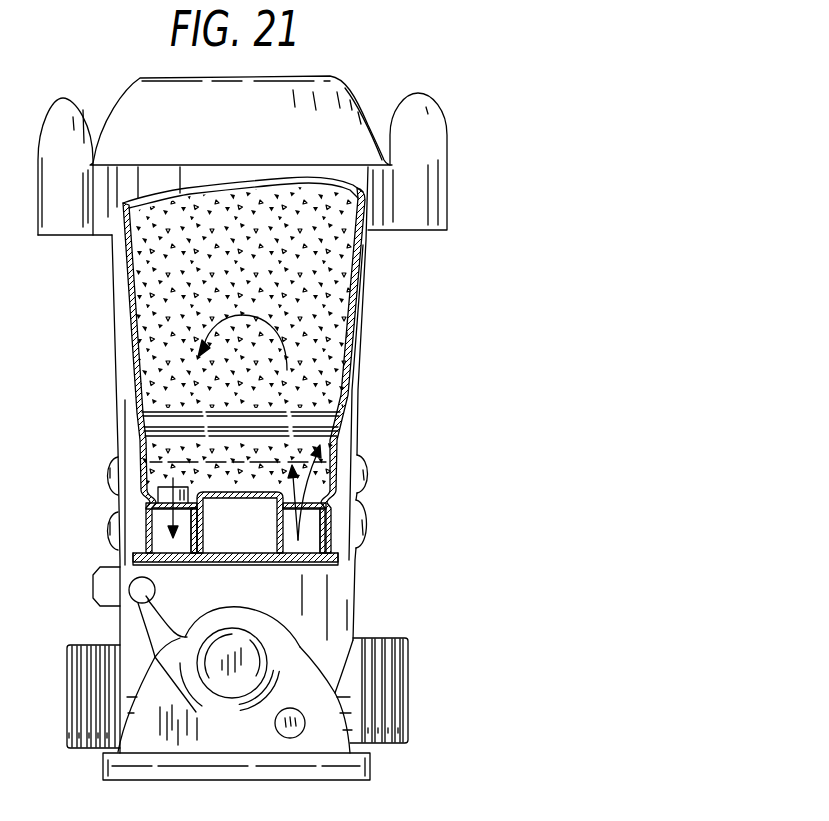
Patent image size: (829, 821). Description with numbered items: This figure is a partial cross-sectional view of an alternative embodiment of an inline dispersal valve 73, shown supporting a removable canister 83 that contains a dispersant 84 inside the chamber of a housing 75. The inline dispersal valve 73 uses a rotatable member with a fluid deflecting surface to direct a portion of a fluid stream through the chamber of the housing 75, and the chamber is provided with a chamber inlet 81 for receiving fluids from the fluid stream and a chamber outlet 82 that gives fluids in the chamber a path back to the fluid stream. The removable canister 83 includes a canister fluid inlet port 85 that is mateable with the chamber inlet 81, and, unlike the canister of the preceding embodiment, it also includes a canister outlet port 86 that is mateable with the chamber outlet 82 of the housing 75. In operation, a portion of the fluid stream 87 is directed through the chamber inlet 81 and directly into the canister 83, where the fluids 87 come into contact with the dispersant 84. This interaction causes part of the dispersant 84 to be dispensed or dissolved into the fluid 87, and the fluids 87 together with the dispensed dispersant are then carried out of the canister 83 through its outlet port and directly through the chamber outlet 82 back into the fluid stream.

The inline dispersal valve 73 is at (408, 80).
The housing 75 is at (362, 318).
The removable canister 83 is at (347, 382).
The dispersant 84 is at (236, 291).
The fluid stream portion 87 is at (347, 458).
The canister fluid inlet port 85 is at (357, 525).
The canister outlet port 86 is at (155, 517).
The chamber outlet 82 is at (168, 538).
The chamber inlet 81 is at (350, 545).